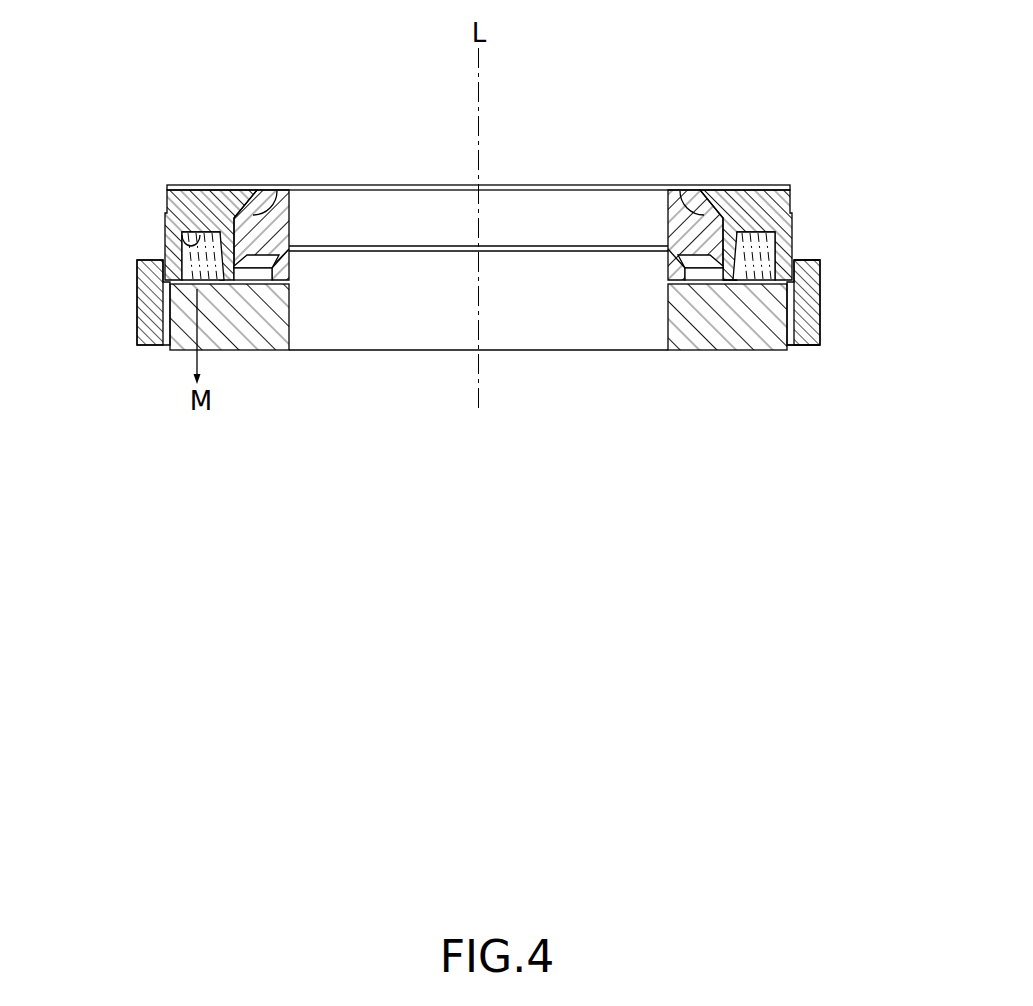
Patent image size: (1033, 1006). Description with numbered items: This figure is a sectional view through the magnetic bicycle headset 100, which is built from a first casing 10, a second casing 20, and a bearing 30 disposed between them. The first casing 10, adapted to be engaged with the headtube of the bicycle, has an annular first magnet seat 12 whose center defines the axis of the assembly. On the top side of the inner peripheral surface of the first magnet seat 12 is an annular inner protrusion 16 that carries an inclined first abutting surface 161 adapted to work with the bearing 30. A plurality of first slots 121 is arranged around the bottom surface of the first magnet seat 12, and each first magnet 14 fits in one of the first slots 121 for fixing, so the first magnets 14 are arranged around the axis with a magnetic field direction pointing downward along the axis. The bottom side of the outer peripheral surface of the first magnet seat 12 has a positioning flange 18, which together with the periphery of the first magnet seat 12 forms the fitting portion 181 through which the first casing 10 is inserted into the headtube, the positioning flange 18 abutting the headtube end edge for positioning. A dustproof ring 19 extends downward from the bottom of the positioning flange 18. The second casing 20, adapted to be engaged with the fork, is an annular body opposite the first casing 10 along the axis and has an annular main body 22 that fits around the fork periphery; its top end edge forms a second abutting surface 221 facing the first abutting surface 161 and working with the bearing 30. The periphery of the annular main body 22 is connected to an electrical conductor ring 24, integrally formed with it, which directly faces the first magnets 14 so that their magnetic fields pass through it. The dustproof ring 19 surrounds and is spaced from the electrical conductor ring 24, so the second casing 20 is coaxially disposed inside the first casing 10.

The magnetic bicycle headset 100 is at (343, 122).
The first casing 10 is at (200, 177).
The first magnet seat 12 is at (792, 188).
The first slot 121 is at (178, 248).
The first magnet 14 is at (190, 265).
The inner protrusion 16 is at (710, 186).
The first abutting surface 161 is at (678, 197).
The bearing 30 is at (718, 262).
The positioning flange 18 is at (822, 273).
The fitting portion 181 is at (817, 258).
The dustproof ring 19 is at (820, 316).
The electrical conductor ring 24 is at (767, 320).
The second casing 20 is at (268, 359).
The annular main body 22 is at (509, 333).
The second abutting surface 221 is at (733, 280).